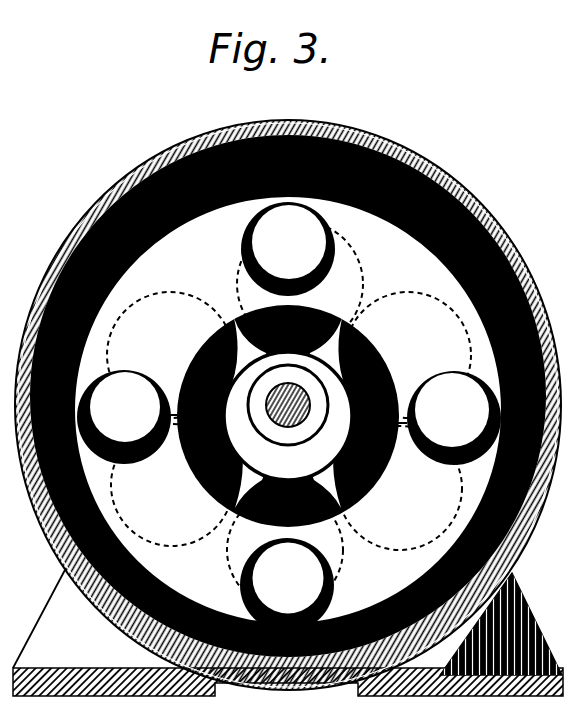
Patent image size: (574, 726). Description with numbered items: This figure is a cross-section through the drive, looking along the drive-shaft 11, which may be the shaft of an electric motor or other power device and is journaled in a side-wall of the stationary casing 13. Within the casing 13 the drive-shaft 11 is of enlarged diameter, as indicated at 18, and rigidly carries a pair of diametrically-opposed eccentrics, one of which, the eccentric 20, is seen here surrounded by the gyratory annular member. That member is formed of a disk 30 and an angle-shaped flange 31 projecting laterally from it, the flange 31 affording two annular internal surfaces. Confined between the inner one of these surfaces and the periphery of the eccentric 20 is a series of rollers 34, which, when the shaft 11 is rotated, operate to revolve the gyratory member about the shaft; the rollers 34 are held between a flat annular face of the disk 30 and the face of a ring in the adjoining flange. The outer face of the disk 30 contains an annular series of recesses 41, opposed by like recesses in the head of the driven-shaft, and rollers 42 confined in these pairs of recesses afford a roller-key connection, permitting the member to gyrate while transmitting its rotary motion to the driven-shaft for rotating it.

The drive-shaft 11 is at (303, 424).
The stationary casing 13 is at (42, 525).
The enlarged diameter portion of the shaft 18 is at (312, 408).
The eccentric 20 is at (288, 416).
The disk 30 is at (288, 396).
The angle-shaped flange 31 is at (107, 602).
The rollers 34 is at (218, 307).
The recesses 41 is at (330, 262).
The rollers 42 is at (289, 417).